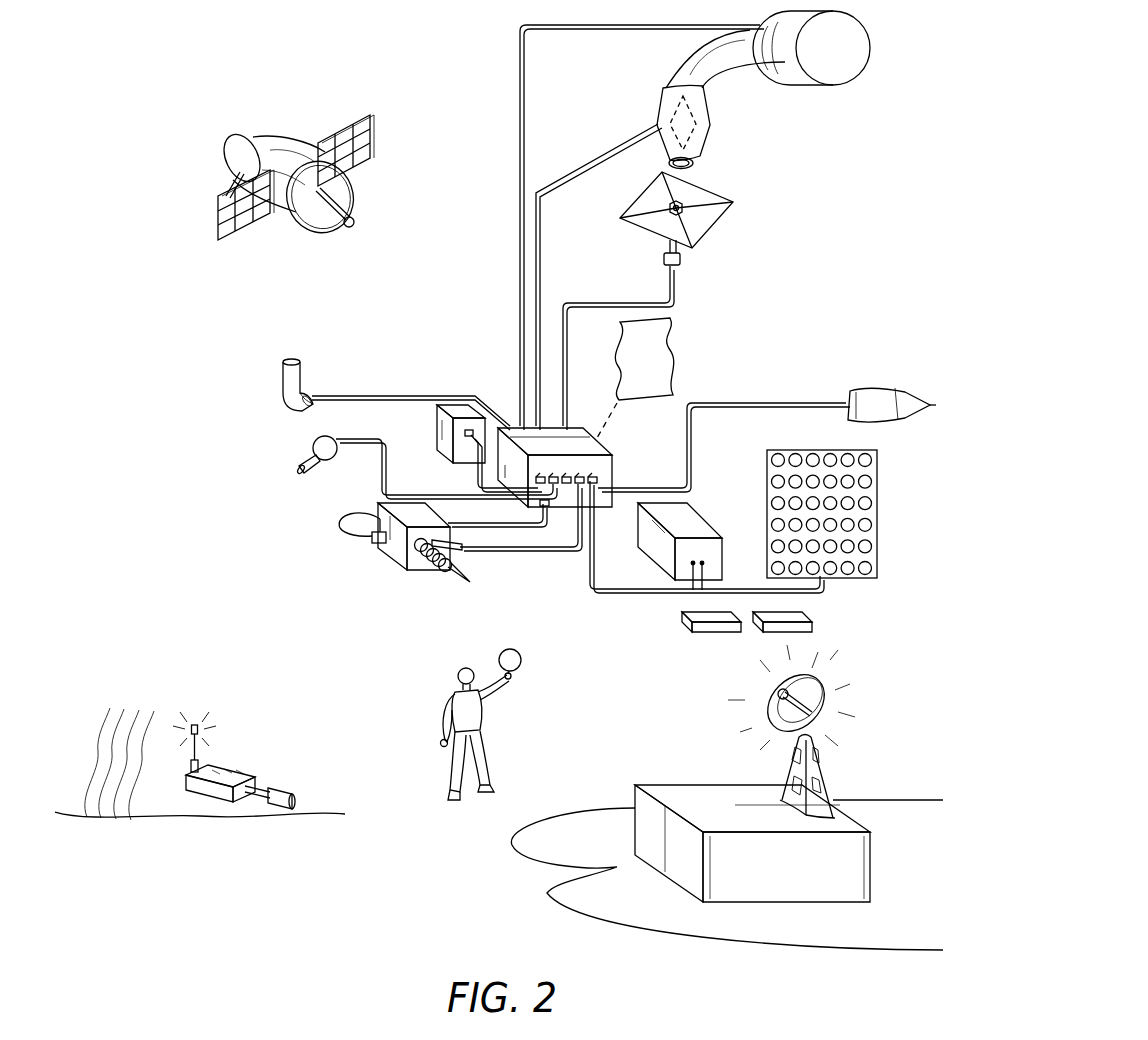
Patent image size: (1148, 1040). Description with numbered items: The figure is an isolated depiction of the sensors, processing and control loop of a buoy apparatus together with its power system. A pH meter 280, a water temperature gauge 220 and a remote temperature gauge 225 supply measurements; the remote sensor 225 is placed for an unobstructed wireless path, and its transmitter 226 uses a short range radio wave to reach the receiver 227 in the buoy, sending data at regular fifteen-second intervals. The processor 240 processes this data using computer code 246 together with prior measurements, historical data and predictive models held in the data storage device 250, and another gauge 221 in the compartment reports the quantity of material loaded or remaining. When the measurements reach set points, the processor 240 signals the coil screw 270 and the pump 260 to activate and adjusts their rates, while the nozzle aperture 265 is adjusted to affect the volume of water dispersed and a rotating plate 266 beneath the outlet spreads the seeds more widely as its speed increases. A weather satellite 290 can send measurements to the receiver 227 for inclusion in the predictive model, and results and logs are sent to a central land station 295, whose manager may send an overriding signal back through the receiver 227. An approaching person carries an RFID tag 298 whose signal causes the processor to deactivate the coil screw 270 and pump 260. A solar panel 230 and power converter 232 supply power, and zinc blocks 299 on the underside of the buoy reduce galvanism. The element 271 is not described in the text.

The water temperature gauge 220 is at (313, 463).
The gauge 221 is at (397, 545).
The remote temperature gauge 225 is at (240, 778).
The transmitter 226 is at (205, 722).
The receiver 227 is at (283, 378).
The solar panel 230 is at (879, 565).
The power converter 232 is at (700, 517).
The processor 240 is at (613, 452).
The computer code 246 is at (688, 347).
The data storage device 250 is at (437, 432).
The pump 260 is at (820, 88).
The nozzle aperture 265 is at (712, 106).
The rotating plate 266 is at (700, 193).
The coil screw 270 is at (450, 582).
The clip 271 is at (350, 533).
The pH meter 280 is at (923, 403).
The weather satellite 290 is at (288, 138).
The central land station 295 is at (815, 900).
The RFID tag 298 is at (520, 658).
The zinc blocks 299 is at (715, 633).